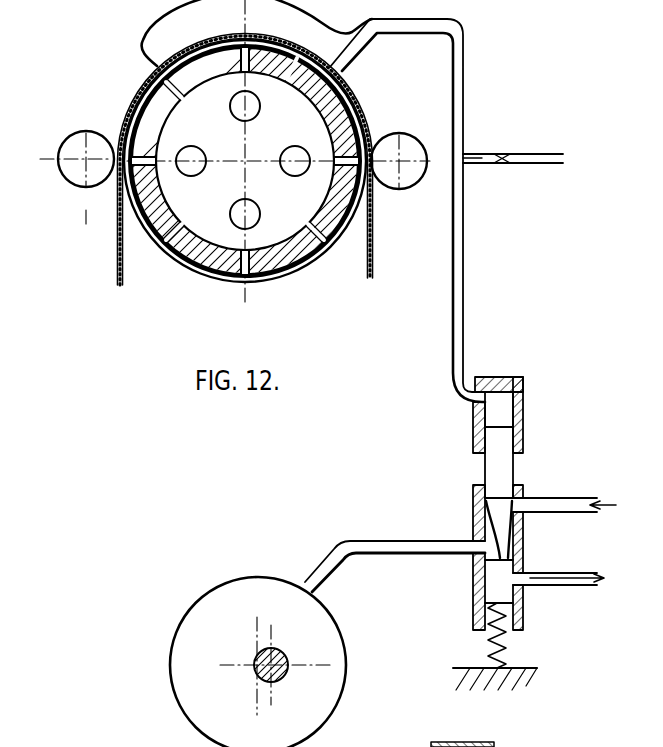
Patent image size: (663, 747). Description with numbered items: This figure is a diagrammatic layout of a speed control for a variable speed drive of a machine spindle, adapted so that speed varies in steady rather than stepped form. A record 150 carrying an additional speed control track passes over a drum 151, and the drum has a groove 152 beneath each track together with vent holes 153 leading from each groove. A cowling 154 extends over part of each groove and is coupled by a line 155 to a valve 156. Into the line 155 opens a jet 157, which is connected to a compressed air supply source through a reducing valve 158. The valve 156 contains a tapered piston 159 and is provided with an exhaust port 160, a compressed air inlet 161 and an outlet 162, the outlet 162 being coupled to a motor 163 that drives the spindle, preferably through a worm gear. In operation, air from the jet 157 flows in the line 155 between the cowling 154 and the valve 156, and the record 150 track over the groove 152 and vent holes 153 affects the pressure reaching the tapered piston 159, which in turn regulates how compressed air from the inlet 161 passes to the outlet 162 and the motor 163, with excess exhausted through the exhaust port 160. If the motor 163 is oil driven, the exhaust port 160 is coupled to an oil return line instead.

The record 150 is at (357, 102).
The drum 151 is at (203, 217).
The groove 152 is at (298, 265).
The vent holes 153 is at (373, 198).
The cowling 154 is at (301, 23).
The line 155 is at (458, 32).
The valve 156 is at (525, 385).
The jet 157 is at (473, 152).
The reducing valve 158 is at (499, 163).
The tapered piston 159 is at (498, 460).
The exhaust port 160 is at (552, 578).
The compressed air inlet 161 is at (574, 507).
The outlet 162 is at (407, 548).
The motor 163 is at (322, 643).